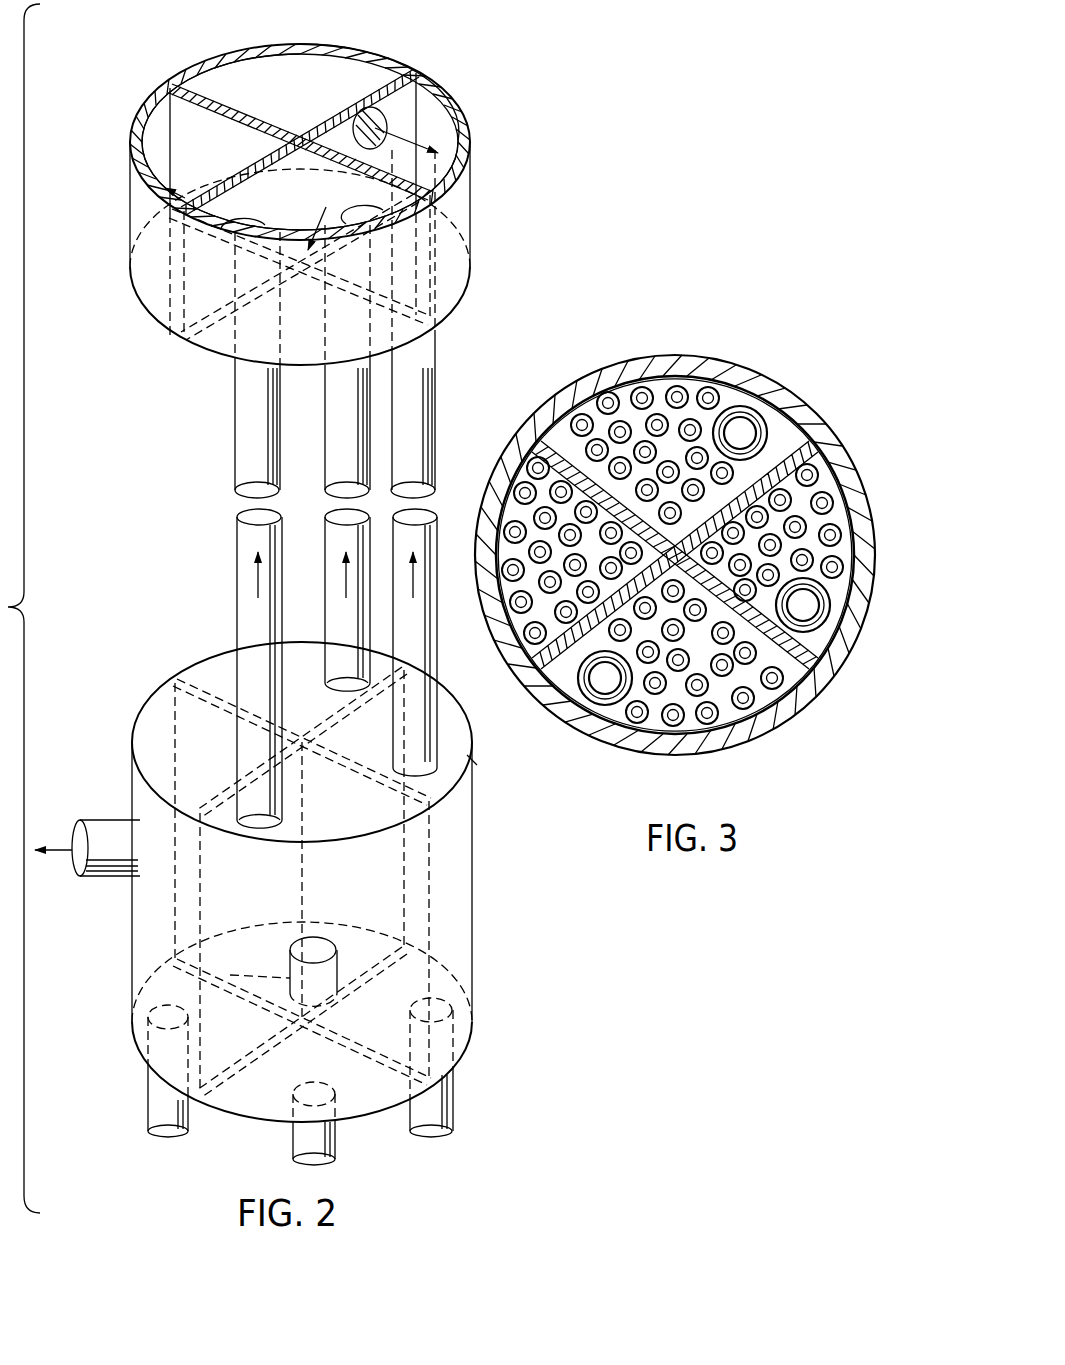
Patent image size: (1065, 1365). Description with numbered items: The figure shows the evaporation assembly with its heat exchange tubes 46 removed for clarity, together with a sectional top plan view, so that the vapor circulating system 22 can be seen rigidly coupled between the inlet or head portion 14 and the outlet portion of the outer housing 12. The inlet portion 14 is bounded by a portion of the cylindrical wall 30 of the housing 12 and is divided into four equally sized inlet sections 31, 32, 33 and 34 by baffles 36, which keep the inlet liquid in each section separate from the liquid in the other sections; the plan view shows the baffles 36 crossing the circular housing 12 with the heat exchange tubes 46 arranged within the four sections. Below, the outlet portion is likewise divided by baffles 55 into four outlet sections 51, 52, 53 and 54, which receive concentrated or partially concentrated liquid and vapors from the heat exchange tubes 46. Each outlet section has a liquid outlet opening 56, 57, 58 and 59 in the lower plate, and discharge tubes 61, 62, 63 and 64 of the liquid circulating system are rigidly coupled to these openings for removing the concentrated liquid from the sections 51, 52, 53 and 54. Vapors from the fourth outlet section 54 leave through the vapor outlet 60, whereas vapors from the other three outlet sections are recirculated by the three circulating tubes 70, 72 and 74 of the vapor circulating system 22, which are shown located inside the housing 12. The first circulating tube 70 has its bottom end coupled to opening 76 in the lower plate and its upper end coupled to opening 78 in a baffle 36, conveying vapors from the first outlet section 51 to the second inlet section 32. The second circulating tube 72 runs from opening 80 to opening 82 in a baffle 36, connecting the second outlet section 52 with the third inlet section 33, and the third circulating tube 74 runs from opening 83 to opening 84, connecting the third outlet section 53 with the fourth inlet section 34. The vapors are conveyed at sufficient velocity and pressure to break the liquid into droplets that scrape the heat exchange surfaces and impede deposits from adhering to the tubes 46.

In FIG. 3, the outer housing 12 is at (538, 702).
In FIG. 3, the inlet or head portion 14 is at (614, 345).
In FIG. 2, the vapor circulating system 22 is at (185, 442).
In FIG. 2, the cylindrical wall 30 is at (300, 204).
In FIG. 3, the cylindrical wall 30 is at (550, 400).
In FIG. 2, the first inlet section 31 is at (303, 58).
In FIG. 3, the first inlet section 31 is at (731, 400).
In FIG. 2, the second inlet section 32 is at (436, 112).
In FIG. 3, the second inlet section 32 is at (806, 642).
In FIG. 2, the third inlet section 33 is at (283, 200).
In FIG. 3, the third inlet section 33 is at (622, 712).
In FIG. 2, the fourth inlet section 34 is at (150, 133).
In FIG. 3, the fourth inlet section 34 is at (527, 623).
In FIG. 2, the baffles 36 is at (304, 118).
In FIG. 3, the baffles 36 is at (548, 420).
In FIG. 3, the heat exchange tubes 46 is at (710, 392).
In FIG. 2, the first outlet section 51 is at (215, 670).
In FIG. 2, the second outlet section 52 is at (445, 722).
In FIG. 2, the third outlet section 53 is at (340, 820).
In FIG. 2, the fourth outlet section 54 is at (158, 745).
In FIG. 2, the baffles 55 is at (196, 700).
In FIG. 2, the liquid outlet opening 56 is at (337, 945).
In FIG. 2, the liquid outlet opening 57 is at (416, 1010).
In FIG. 2, the liquid outlet opening 58 is at (338, 1092).
In FIG. 2, the liquid outlet opening 59 is at (190, 1028).
In FIG. 2, the vapor outlet 60 is at (103, 818).
In FIG. 2, the discharge tube 61 is at (290, 978).
In FIG. 2, the discharge tube 62 is at (453, 1112).
In FIG. 2, the discharge tube 63 is at (337, 1135).
In FIG. 2, the discharge tube 64 is at (148, 1090).
In FIG. 2, the first circulating tube 70 is at (325, 464).
In FIG. 3, the first circulating tube 70 is at (764, 415).
In FIG. 2, the second circulating tube 72 is at (436, 448).
In FIG. 3, the second circulating tube 72 is at (827, 620).
In FIG. 2, the third circulating tube 74 is at (234, 420).
In FIG. 3, the third circulating tube 74 is at (598, 708).
In FIG. 2, the opening 76 is at (338, 685).
In FIG. 2, the opening 78 is at (379, 124).
In FIG. 2, the opening 80 is at (425, 760).
In FIG. 2, the opening 82 is at (357, 218).
In FIG. 2, the opening 83 is at (272, 804).
In FIG. 2, the opening 84 is at (212, 238).